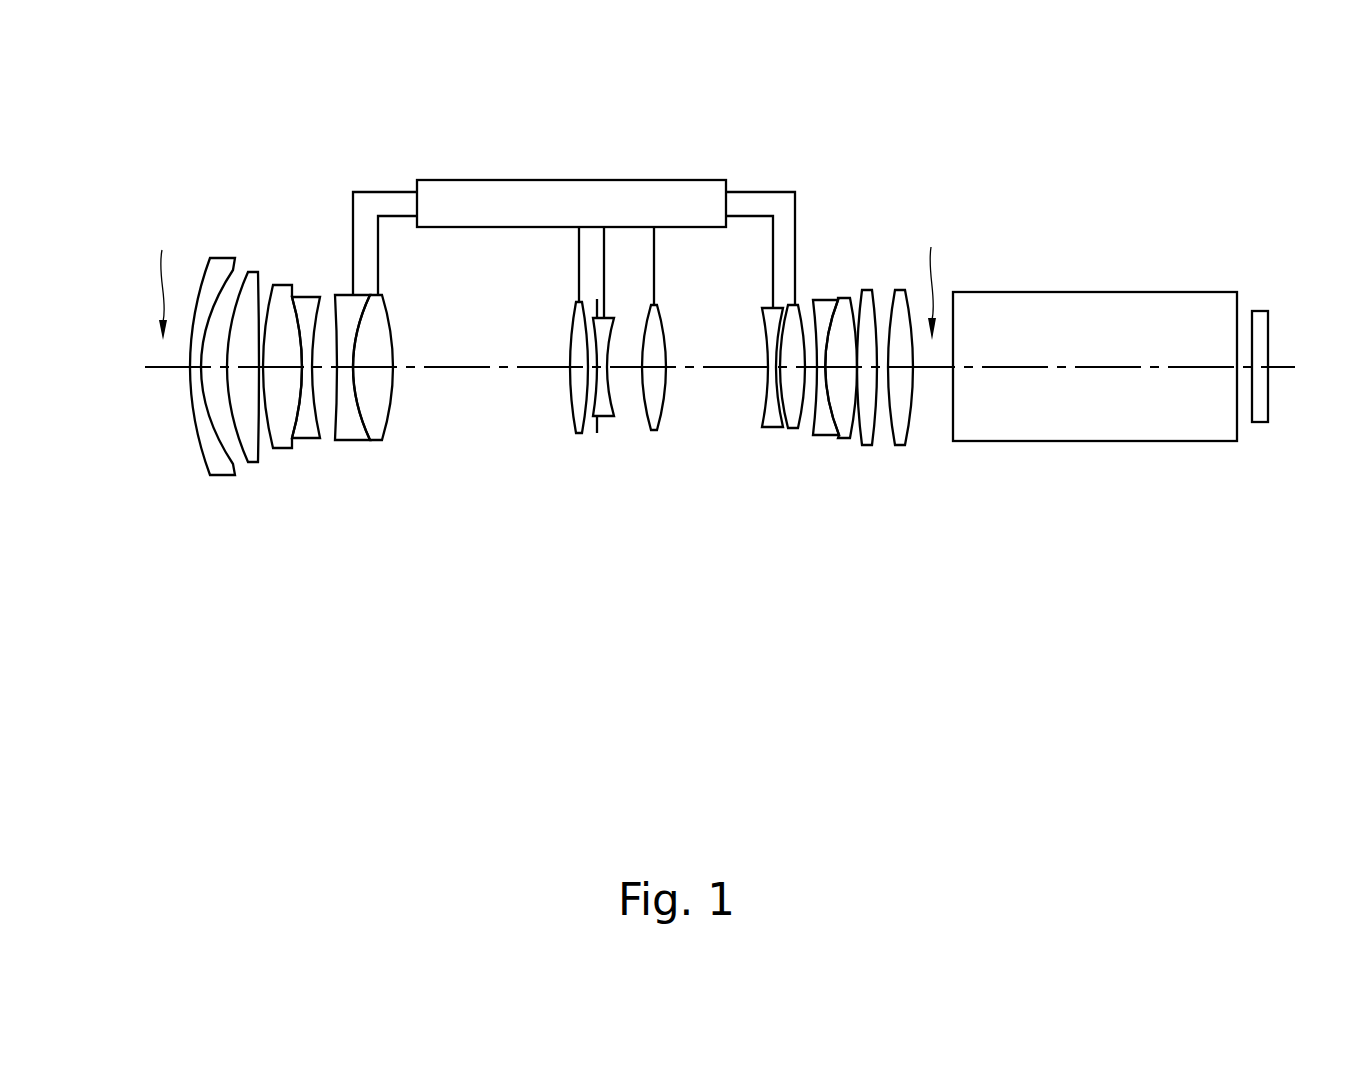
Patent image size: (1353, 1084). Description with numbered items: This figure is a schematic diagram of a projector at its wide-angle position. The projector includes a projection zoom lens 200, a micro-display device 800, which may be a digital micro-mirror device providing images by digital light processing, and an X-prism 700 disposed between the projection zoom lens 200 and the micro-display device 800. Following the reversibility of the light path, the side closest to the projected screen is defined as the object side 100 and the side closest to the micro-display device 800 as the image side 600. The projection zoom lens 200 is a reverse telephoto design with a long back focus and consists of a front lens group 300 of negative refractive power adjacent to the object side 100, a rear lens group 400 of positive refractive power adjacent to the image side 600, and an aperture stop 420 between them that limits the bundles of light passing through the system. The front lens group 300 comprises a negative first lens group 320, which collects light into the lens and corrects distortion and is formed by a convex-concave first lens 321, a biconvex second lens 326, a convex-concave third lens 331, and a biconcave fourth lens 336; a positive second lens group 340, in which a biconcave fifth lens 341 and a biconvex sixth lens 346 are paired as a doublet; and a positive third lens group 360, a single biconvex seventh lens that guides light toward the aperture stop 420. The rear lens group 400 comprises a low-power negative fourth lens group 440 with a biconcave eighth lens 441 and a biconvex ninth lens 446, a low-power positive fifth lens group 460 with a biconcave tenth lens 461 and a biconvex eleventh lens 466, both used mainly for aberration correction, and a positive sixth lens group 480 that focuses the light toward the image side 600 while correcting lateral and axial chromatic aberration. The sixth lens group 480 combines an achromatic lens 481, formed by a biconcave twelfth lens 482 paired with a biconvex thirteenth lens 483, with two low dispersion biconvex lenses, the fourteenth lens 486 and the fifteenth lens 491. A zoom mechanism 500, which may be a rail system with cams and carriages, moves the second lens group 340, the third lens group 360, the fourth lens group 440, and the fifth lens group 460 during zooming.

The object side 100 is at (714, 468).
The projection zoom lens 200 is at (768, 755).
The front lens group 300 is at (570, 690).
The first lens group 320 is at (142, 605).
The first lens 321 is at (203, 428).
The second lens 326 is at (248, 440).
The third lens 331 is at (281, 435).
The fourth lens 336 is at (305, 428).
The second lens group 340 is at (380, 562).
The fifth lens 341 is at (348, 432).
The sixth lens 346 is at (378, 427).
The third lens group 360 is at (581, 427).
The rear lens group 400 is at (585, 690).
The aperture stop 420 is at (596, 423).
The fourth lens group 440 is at (677, 508).
The eighth lens 441 is at (605, 413).
The ninth lens 446 is at (656, 417).
The fifth lens group 460 is at (767, 607).
The tenth lens 461 is at (768, 415).
The eleventh lens 466 is at (793, 418).
The sixth lens group 480 is at (947, 607).
The achromatic lens 481 is at (865, 540).
The twelfth lens 482 is at (822, 423).
The thirteenth lens 483 is at (845, 436).
The fourteenth lens 486 is at (868, 437).
The fifteenth lens 491 is at (900, 440).
The zoom mechanism 500 is at (573, 188).
The image side 600 is at (929, 276).
The X-prism 700 is at (1105, 307).
The micro-display device 800 is at (1260, 318).